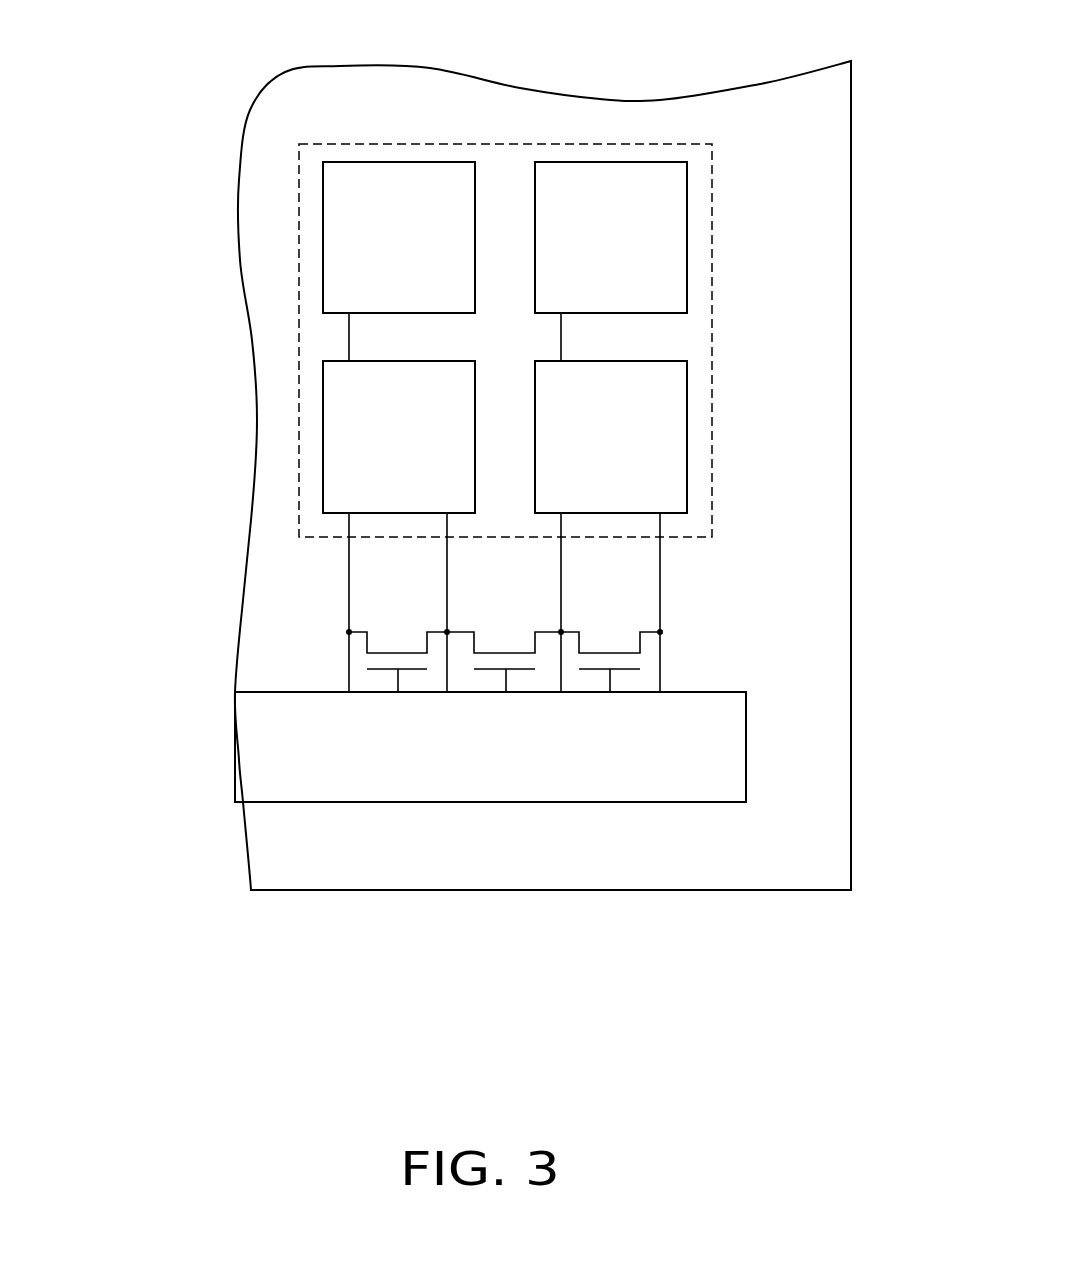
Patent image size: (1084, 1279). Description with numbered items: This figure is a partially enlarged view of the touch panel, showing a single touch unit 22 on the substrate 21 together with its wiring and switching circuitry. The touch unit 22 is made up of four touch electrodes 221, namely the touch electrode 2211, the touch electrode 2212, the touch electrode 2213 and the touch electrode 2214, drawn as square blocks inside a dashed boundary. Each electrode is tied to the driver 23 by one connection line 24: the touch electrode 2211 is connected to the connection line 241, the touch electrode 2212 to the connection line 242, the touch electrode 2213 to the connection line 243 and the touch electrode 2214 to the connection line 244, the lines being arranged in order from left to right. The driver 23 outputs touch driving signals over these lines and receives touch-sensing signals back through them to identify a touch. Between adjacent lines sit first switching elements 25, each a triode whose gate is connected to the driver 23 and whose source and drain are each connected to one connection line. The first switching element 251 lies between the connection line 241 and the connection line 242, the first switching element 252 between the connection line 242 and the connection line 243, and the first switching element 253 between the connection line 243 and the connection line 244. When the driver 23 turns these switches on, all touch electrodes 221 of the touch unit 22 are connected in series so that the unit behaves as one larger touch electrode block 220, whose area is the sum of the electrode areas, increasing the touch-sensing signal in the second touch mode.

The substrate 21 is at (851, 500).
The touch unit 22 is at (405, 340).
The touch electrode block 220 is at (299, 420).
The touch electrode 221 is at (266, 237).
The touch electrode 2211 is at (323, 243).
The touch electrode 2212 is at (323, 478).
The touch electrode 2213 is at (610, 162).
The touch electrode 2214 is at (687, 437).
The driver 23 is at (746, 770).
The connection line 24 is at (219, 502).
The connection line 241 is at (347, 582).
The connection line 242 is at (447, 595).
The connection line 243 is at (560, 609).
The connection line 244 is at (662, 618).
The first switching element 25 is at (267, 681).
The first switching element 251 is at (352, 683).
The first switching element 252 is at (536, 677).
The first switching element 253 is at (649, 664).